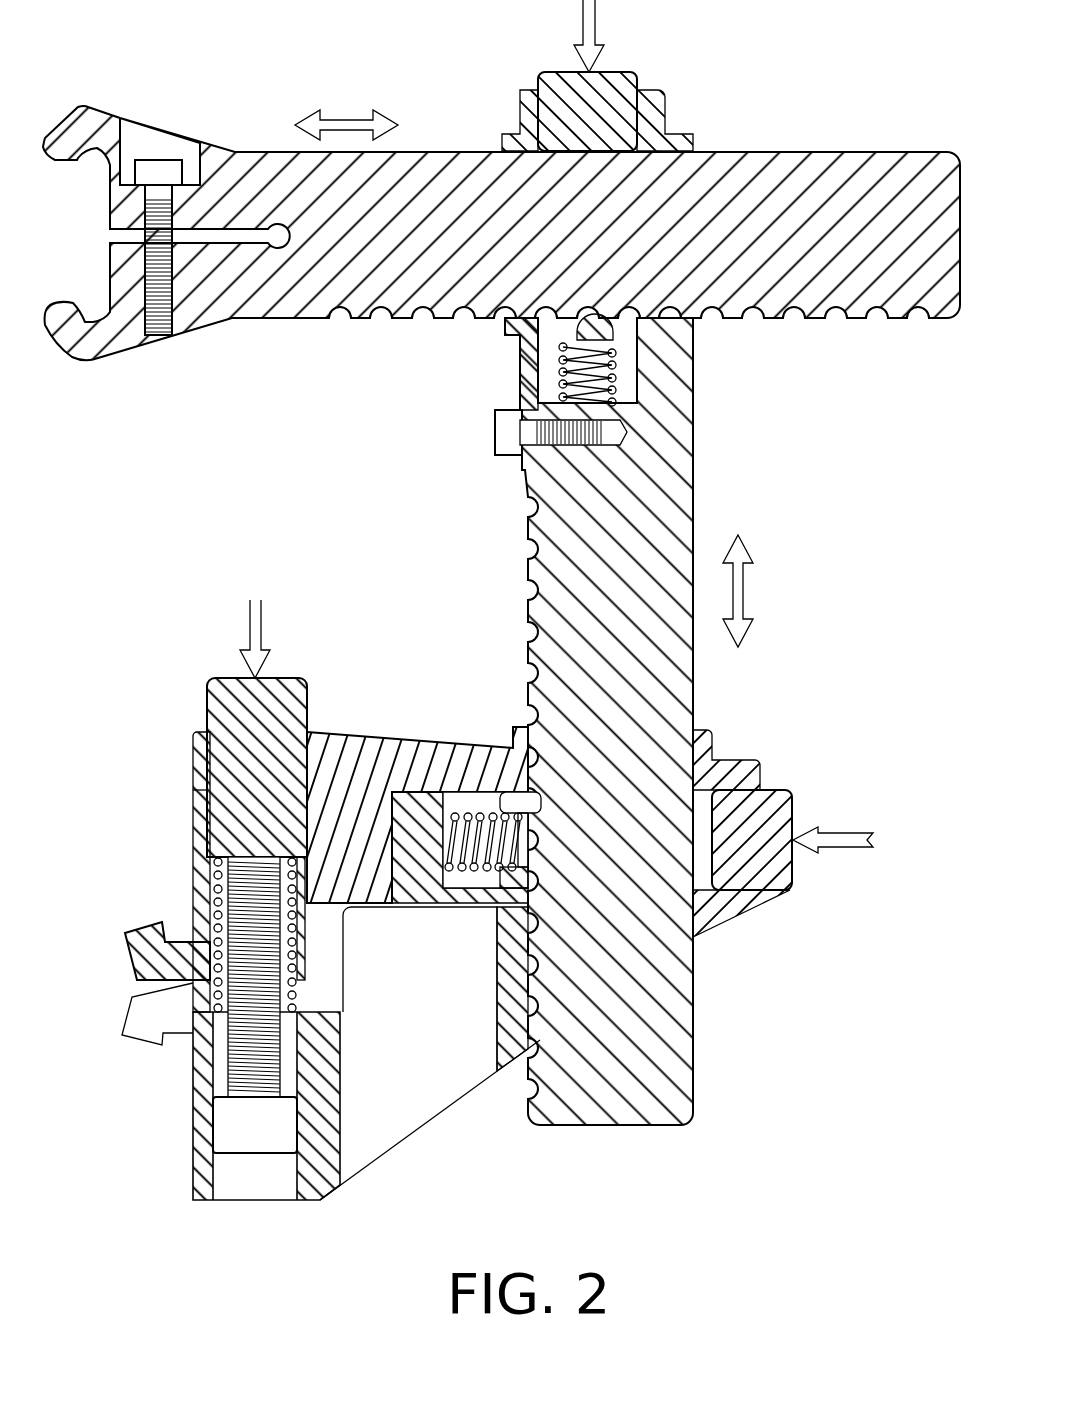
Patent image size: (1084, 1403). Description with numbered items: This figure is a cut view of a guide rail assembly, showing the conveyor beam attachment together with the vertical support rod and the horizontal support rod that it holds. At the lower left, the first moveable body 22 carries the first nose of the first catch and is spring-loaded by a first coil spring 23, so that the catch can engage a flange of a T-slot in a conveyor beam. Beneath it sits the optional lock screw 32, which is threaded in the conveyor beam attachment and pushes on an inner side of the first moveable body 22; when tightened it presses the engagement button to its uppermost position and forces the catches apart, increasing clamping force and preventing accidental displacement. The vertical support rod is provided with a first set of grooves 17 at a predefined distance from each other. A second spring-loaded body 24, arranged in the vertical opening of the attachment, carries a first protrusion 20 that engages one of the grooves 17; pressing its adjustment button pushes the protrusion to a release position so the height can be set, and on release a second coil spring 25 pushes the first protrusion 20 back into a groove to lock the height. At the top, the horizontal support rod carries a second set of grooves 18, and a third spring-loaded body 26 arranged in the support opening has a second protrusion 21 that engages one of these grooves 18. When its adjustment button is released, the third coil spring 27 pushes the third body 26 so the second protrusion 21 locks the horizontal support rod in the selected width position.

The grooves 17 is at (492, 578).
The grooves 18 is at (430, 340).
The first protrusion 20 is at (520, 845).
The second protrusion 21 is at (590, 323).
The first moveable body 22 is at (257, 737).
The first coil spring 23 is at (213, 993).
The second spring-loaded body 24 is at (745, 820).
The second coil spring 25 is at (463, 815).
The third spring-loaded body 26 is at (573, 113).
The third coil spring 27 is at (617, 377).
The lock screw 32 is at (255, 1130).